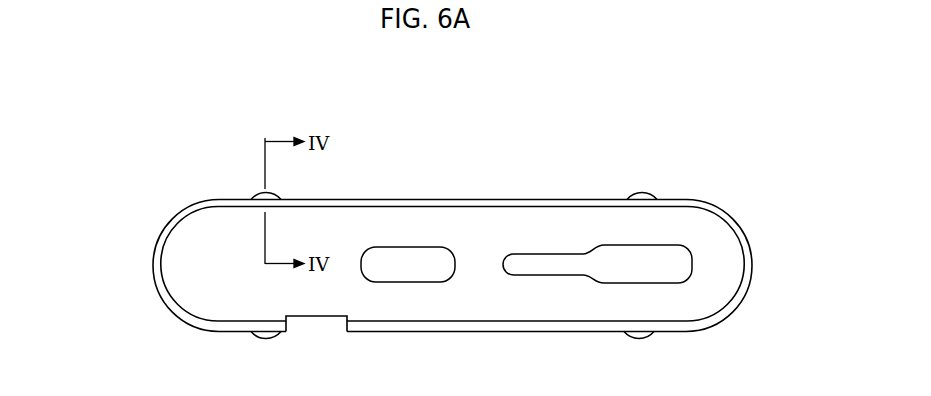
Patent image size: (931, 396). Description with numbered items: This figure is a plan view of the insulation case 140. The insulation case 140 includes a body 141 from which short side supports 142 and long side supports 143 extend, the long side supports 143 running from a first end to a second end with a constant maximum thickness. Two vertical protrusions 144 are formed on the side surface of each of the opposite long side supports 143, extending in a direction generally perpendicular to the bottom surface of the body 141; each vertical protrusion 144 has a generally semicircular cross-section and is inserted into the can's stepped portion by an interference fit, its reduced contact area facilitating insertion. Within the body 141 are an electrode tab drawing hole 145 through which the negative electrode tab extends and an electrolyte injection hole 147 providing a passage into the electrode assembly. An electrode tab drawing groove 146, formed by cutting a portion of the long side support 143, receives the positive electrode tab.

The insulation case 140 is at (562, 149).
The body 141 is at (563, 300).
The short side support 142 is at (172, 225).
The long side support 143 is at (485, 203).
The vertical protrusion 144 is at (265, 337).
The electrode tab drawing hole 145 is at (620, 273).
The electrode tab drawing groove 146 is at (313, 318).
The electrolyte injection hole 147 is at (401, 272).